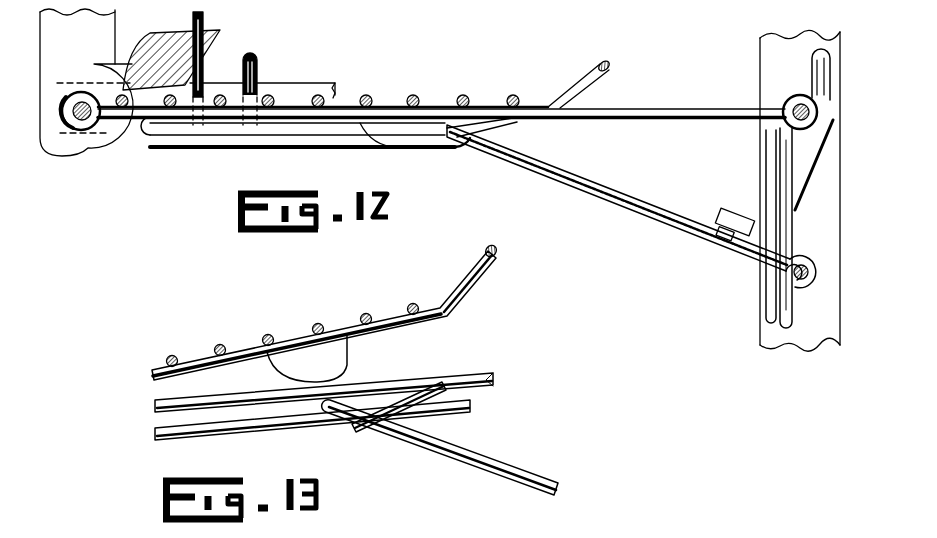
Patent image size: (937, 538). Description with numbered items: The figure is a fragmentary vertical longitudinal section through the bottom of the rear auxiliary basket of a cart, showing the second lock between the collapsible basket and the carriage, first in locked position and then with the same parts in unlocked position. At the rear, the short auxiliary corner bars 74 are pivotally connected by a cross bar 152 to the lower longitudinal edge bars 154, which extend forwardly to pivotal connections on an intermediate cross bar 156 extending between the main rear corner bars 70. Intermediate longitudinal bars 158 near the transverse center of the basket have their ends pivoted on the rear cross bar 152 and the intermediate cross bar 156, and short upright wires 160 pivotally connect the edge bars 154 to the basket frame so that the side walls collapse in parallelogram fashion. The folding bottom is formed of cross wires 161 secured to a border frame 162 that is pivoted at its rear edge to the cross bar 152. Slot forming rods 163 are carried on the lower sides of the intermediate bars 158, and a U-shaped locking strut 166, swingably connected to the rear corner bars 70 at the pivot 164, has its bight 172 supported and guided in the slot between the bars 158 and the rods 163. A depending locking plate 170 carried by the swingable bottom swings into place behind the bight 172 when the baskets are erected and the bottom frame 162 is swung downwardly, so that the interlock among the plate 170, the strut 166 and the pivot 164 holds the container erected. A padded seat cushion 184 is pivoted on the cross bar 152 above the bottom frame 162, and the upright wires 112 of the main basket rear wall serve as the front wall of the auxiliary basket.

In FIG. 12, the rear corner bars 70 is at (795, 40).
In FIG. 12, the auxiliary corner bars 74 is at (88, 28).
In FIG. 12, the vertical wires 112 is at (812, 62).
In FIG. 12, the cross bar 152 is at (82, 122).
In FIG. 12, the lower longitudinal edge bars 154 is at (282, 85).
In FIG. 12, the intermediate cross bar 156 is at (790, 118).
In FIG. 12, the intermediate longitudinal bars 158 is at (648, 110).
In FIG. 13, the intermediate longitudinal bars 158 is at (410, 380).
In FIG. 12, the short upright wires 160 is at (206, 22).
In FIG. 12, the cross wires 161 is at (222, 94).
In FIG. 13, the cross wires 161 is at (217, 345).
In FIG. 12, the border frame 162 is at (98, 128).
In FIG. 13, the border frame 162 is at (205, 363).
In FIG. 12, the slot forming rods 163 is at (283, 148).
In FIG. 13, the slot forming rods 163 is at (268, 430).
In FIG. 12, the pivot 164 is at (790, 270).
In FIG. 12, the locking strut 166 is at (662, 206).
In FIG. 13, the locking strut 166 is at (440, 453).
In FIG. 12, the locking plate 170 is at (430, 148).
In FIG. 13, the locking plate 170 is at (349, 358).
In FIG. 12, the bight 172 is at (505, 128).
In FIG. 13, the bight 172 is at (338, 420).
In FIG. 12, the seat cushion 184 is at (186, 45).